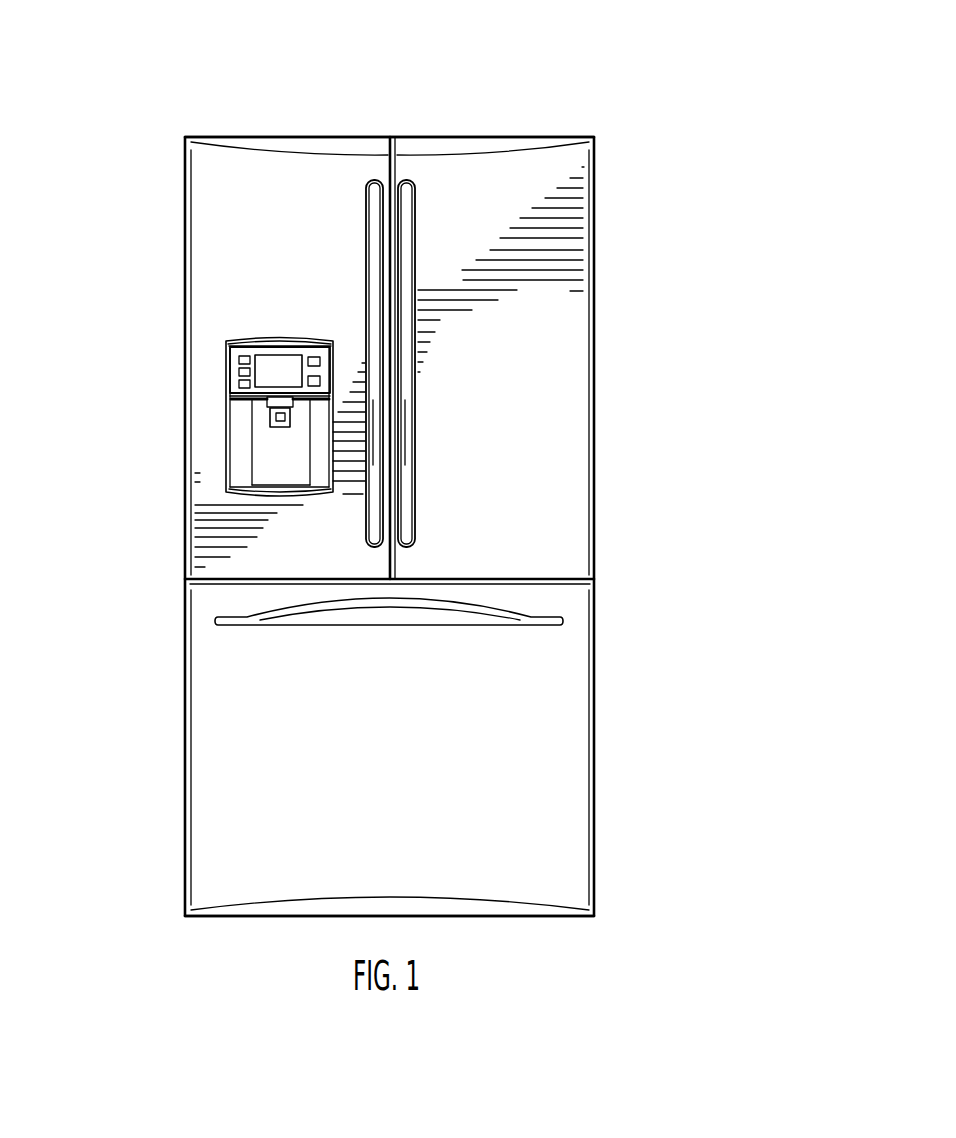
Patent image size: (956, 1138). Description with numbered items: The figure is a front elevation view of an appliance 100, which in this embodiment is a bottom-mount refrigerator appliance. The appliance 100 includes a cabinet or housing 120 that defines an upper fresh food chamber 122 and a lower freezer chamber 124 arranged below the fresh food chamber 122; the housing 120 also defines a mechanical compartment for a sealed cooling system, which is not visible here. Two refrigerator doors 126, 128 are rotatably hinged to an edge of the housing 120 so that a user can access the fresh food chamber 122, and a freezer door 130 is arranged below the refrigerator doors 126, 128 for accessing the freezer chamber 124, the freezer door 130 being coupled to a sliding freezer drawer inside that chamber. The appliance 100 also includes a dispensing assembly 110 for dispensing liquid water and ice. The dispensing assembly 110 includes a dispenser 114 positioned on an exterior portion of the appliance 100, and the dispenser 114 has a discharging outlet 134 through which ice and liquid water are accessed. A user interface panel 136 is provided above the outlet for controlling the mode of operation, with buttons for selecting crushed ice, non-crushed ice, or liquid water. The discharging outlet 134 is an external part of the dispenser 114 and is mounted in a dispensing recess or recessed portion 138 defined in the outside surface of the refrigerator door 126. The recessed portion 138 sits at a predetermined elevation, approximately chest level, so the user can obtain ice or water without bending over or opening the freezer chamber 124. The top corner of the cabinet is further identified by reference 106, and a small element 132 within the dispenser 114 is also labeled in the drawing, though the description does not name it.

The appliance 100 is at (594, 54).
The cabinet 106 is at (605, 136).
The dispensing assembly 110 is at (195, 471).
The dispenser 114 is at (278, 475).
The cabinet or housing 120 is at (205, 698).
The fresh food chamber 122 is at (572, 478).
The freezer chamber 124 is at (586, 623).
The refrigerator door 126 is at (208, 244).
The refrigerator door 128 is at (563, 234).
The freezer door 130 is at (580, 710).
The dispenser nozzle 132 is at (268, 410).
The discharging outlet 134 is at (262, 400).
The user interface panel 136 is at (233, 378).
The dispensing recess or recessed portion 138 is at (299, 480).